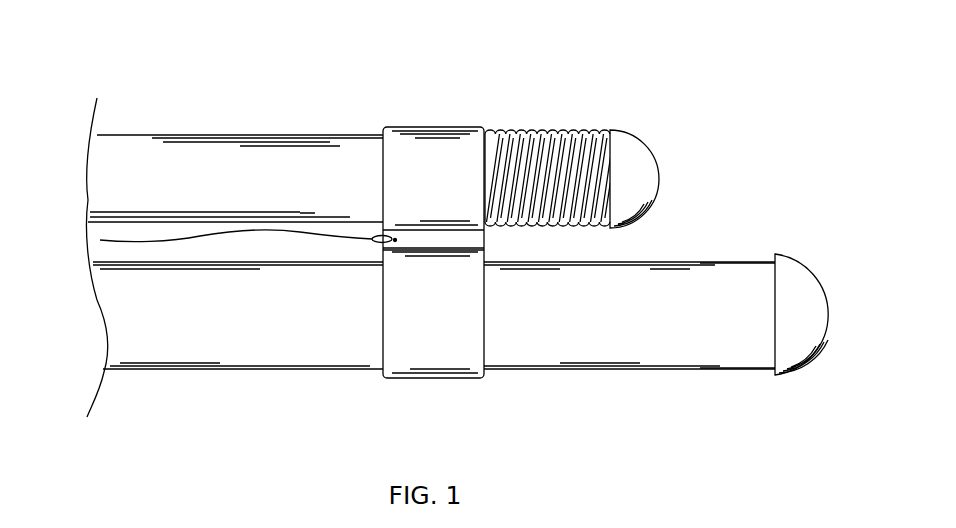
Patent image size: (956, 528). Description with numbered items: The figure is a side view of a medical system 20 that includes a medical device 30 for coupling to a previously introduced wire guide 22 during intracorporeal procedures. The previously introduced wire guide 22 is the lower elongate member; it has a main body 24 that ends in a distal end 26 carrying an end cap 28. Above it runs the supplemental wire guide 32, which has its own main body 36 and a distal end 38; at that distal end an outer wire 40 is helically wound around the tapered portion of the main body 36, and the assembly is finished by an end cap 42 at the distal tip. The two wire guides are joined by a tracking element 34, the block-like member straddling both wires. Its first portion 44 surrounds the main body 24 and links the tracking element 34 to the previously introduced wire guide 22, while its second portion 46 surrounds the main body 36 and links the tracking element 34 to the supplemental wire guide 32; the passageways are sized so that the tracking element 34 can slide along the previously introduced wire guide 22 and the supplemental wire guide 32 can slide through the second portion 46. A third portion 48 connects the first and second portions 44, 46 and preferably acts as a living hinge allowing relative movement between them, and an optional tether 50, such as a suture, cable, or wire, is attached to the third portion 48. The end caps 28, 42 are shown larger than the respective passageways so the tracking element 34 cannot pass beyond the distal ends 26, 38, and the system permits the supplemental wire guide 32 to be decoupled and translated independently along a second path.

The medical system 20 is at (147, 56).
The previously introduced wire guide 22 is at (197, 372).
The main body 24 is at (345, 350).
The distal end 26 is at (743, 355).
The end cap 28 is at (800, 270).
The medical device 30 is at (430, 88).
The supplemental wire guide 32 is at (252, 134).
The tracking element 34 is at (404, 127).
The main body 36 is at (348, 138).
The distal end 38 is at (573, 140).
The outer wire 40 is at (565, 135).
The end cap 42 is at (637, 160).
The first portion 44 is at (460, 353).
The second portion 46 is at (439, 145).
The third portion 48 is at (467, 240).
The tether 50 is at (100, 240).